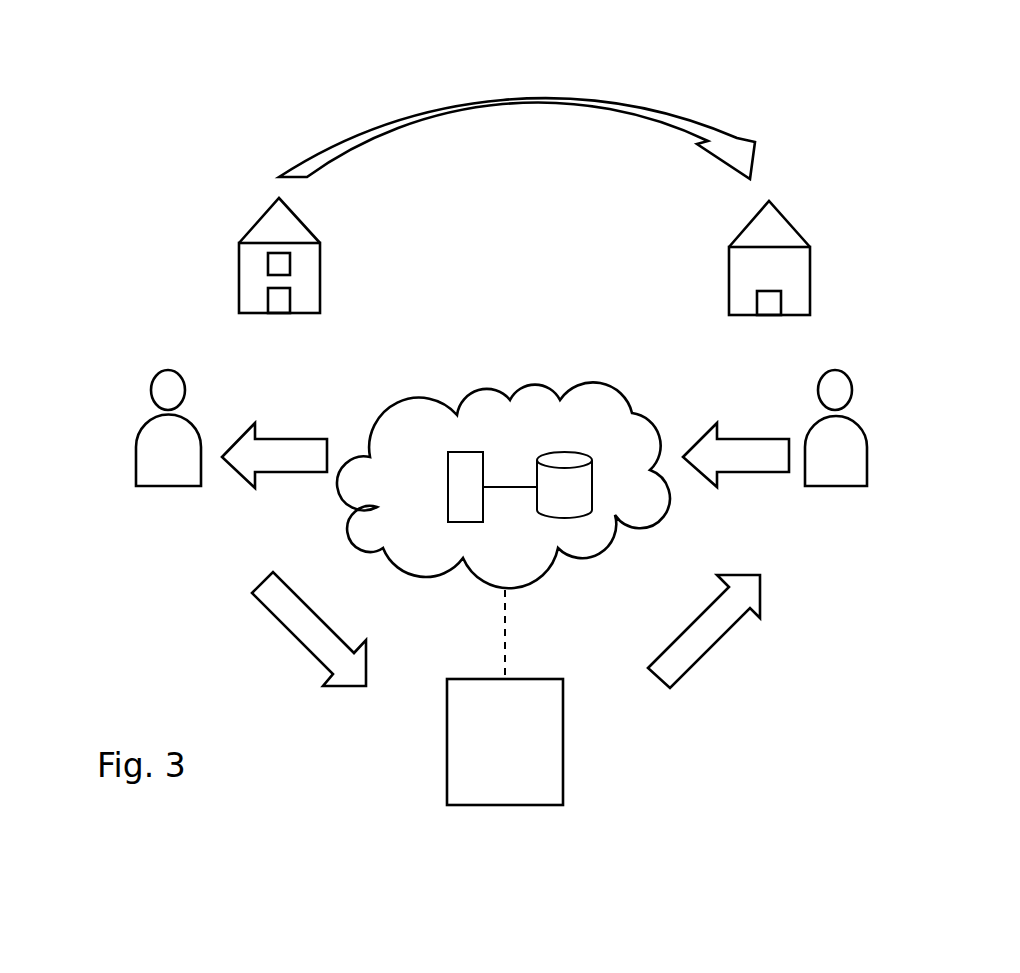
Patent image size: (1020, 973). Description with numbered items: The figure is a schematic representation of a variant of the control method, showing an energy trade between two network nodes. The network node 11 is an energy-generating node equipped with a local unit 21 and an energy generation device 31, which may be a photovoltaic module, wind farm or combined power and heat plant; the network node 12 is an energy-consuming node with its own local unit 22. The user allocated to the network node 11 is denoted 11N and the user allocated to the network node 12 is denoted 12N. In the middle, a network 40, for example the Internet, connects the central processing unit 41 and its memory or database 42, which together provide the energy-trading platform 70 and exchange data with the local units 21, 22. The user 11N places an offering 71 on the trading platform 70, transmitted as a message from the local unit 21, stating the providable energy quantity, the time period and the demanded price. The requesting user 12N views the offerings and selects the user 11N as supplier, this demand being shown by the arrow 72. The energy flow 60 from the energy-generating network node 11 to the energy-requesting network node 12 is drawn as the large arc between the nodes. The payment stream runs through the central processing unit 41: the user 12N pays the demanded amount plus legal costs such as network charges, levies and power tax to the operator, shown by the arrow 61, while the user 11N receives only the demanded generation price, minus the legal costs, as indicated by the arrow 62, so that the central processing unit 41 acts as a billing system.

The network node 11 is at (239, 278).
The network node 12 is at (792, 222).
The user allocated to the network node 11 11N is at (136, 450).
The user allocated to the network node 12 12N is at (867, 448).
The local unit 21 is at (292, 298).
The local unit 22 is at (782, 303).
The energy generation device 31 is at (292, 265).
The network 40 is at (507, 398).
The central processing unit 41 is at (470, 452).
The memory or database 42 is at (560, 452).
The energy flow 60 is at (565, 98).
The monetary transaction 61 is at (758, 439).
The monetary transaction 62 is at (307, 439).
The trading platform 70 is at (505, 805).
The offering 71 is at (297, 638).
The demand 72 is at (713, 645).